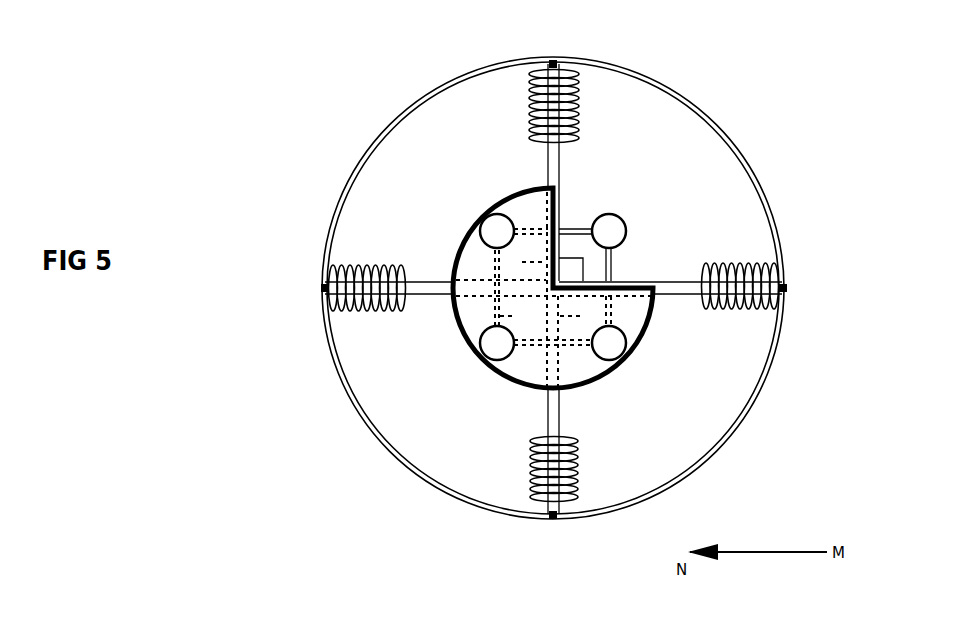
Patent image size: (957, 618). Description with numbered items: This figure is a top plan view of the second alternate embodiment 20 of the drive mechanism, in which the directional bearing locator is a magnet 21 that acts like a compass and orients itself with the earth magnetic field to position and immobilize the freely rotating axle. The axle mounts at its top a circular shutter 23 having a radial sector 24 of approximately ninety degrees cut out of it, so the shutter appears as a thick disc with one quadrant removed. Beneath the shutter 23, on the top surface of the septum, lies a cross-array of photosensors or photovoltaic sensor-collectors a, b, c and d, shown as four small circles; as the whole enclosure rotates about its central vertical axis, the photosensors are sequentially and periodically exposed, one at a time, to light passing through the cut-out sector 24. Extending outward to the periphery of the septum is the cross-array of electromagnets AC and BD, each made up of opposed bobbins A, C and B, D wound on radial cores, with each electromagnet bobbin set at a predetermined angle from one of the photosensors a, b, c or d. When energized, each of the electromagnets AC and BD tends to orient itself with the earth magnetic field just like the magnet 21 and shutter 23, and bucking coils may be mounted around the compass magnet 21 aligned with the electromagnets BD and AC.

The second alternate embodiment of the drive mechanism 20 is at (739, 97).
The magnet 21 is at (585, 240).
The circular shutter 23 is at (577, 393).
The radial sector 24 is at (622, 275).
The electromagnet bobbin A is at (358, 266).
The electromagnet bobbin B is at (528, 95).
The electromagnet bobbin C is at (735, 262).
The electromagnet bobbin D is at (524, 467).
The electromagnet AC is at (432, 290).
The electromagnet BD is at (557, 167).
The photosensor a is at (490, 230).
The photosensor b is at (611, 224).
The photosensor c is at (615, 347).
The photosensor d is at (493, 352).